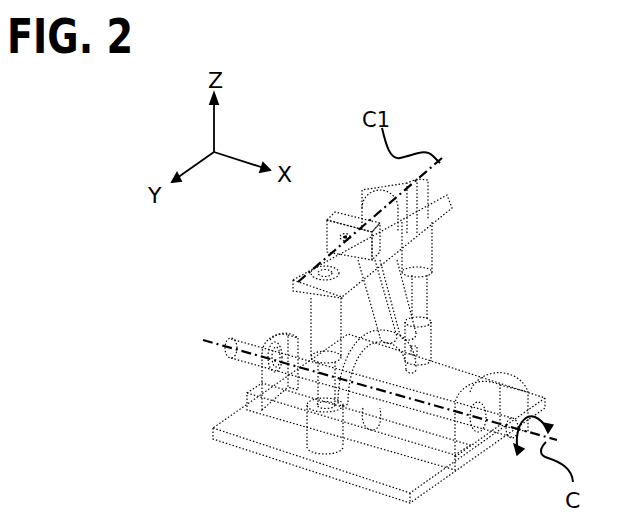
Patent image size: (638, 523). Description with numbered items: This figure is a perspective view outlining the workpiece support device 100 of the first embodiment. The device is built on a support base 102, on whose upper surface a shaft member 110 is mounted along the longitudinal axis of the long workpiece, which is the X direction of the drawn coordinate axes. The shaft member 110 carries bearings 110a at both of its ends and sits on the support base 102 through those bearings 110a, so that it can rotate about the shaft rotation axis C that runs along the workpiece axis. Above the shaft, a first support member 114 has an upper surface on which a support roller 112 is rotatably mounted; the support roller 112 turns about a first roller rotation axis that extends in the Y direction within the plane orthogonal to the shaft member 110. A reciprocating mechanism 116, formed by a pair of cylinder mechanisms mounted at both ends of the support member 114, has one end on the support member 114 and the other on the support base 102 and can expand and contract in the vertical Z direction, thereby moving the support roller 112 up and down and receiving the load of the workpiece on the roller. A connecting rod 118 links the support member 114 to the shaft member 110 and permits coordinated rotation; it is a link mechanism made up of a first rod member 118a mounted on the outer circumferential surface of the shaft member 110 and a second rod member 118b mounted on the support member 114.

The workpiece support device 100 is at (470, 150).
The support base 102 is at (278, 432).
The shaft member 110 is at (236, 344).
The bearings 110a is at (252, 378).
The support roller 112 is at (363, 214).
The first support member 114 is at (437, 195).
The reciprocating mechanism 116 is at (318, 325).
The connecting rod 118 is at (412, 348).
The first rod member 118a is at (400, 370).
The second rod member 118b is at (388, 302).